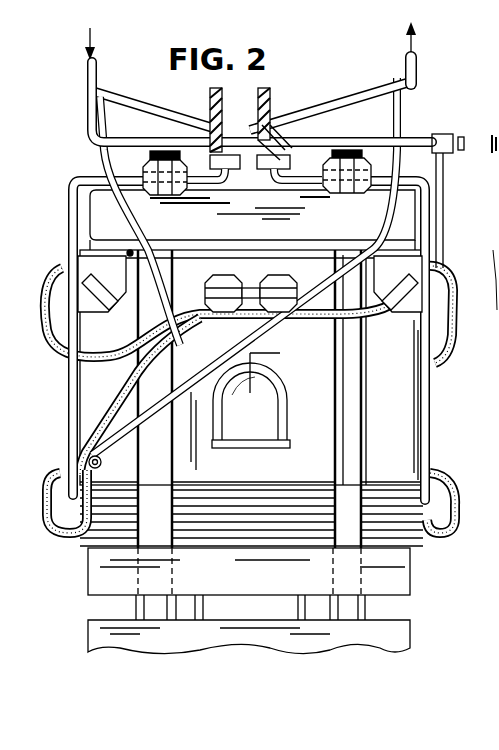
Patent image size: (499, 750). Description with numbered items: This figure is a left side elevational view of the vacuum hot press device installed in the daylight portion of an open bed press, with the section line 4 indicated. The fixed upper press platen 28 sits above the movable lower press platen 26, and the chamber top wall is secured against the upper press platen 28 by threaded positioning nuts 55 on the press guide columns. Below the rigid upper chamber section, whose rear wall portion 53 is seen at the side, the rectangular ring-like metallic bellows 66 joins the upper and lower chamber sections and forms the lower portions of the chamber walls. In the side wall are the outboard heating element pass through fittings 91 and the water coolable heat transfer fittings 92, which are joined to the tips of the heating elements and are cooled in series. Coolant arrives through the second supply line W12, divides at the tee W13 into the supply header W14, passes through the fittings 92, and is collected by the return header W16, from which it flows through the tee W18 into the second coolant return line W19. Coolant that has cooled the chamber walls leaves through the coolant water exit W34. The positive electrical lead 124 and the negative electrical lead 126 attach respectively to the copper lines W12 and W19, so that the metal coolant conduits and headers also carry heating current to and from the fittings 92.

The section line 4- 4 is at (393, 65).
The lower press platen 26 is at (318, 593).
The upper press platen 28 is at (346, 233).
The rear wall portion 53 is at (66, 416).
The positioning nut 55 is at (182, 247).
The bellows 66 is at (400, 537).
The outboard heating element pass through fitting 91 is at (378, 265).
The water coolable heat transfer fitting 92 is at (100, 302).
The positive electrical lead 124 is at (270, 90).
The negative electrical lead 126 is at (210, 97).
The second supply line W12 is at (427, 116).
The tee W13 is at (423, 207).
The supply header W14 is at (432, 224).
The return header W16 is at (78, 230).
The tee W18 is at (77, 196).
The second coolant return line W19 is at (325, 93).
The coolant water exit W34 is at (481, 350).